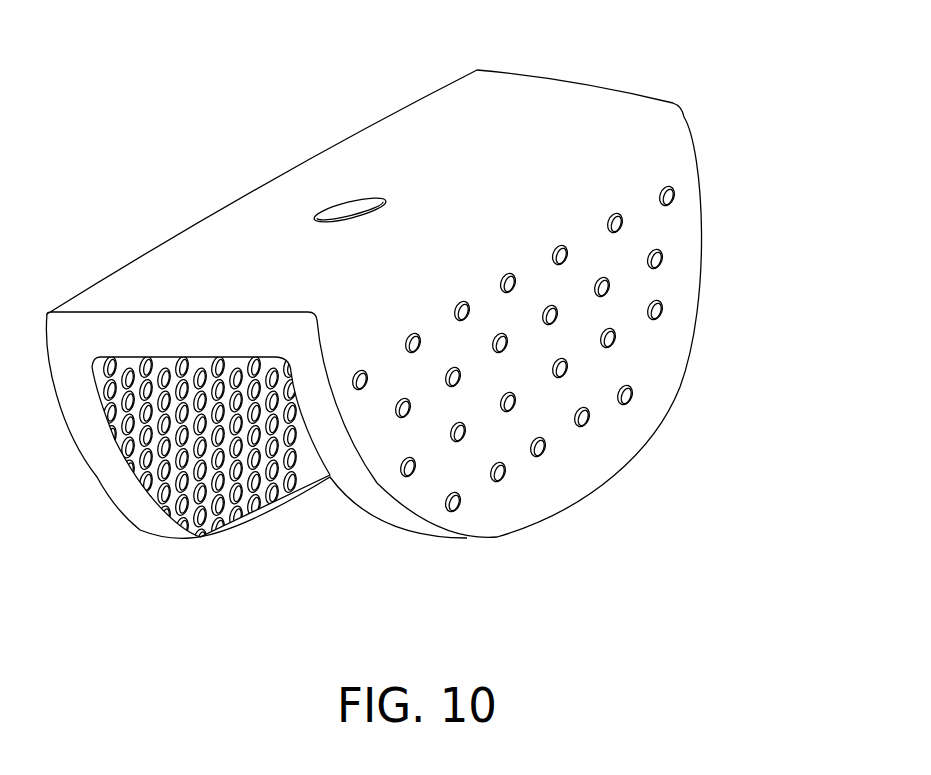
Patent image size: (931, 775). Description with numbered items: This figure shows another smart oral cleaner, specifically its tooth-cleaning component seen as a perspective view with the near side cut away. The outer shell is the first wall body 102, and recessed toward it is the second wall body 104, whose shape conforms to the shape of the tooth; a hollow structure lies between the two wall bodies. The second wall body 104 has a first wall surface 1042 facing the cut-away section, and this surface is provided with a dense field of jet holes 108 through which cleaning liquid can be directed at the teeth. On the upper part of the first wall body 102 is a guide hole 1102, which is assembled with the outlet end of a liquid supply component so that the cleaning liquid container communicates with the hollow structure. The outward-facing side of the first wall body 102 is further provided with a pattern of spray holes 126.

The first wall body 102 is at (643, 362).
The second wall body 104 is at (243, 518).
The first wall surface 1042 is at (190, 522).
The jet holes 108 is at (277, 482).
The spray hole 126 is at (550, 448).
The guide hole 1102 is at (352, 216).